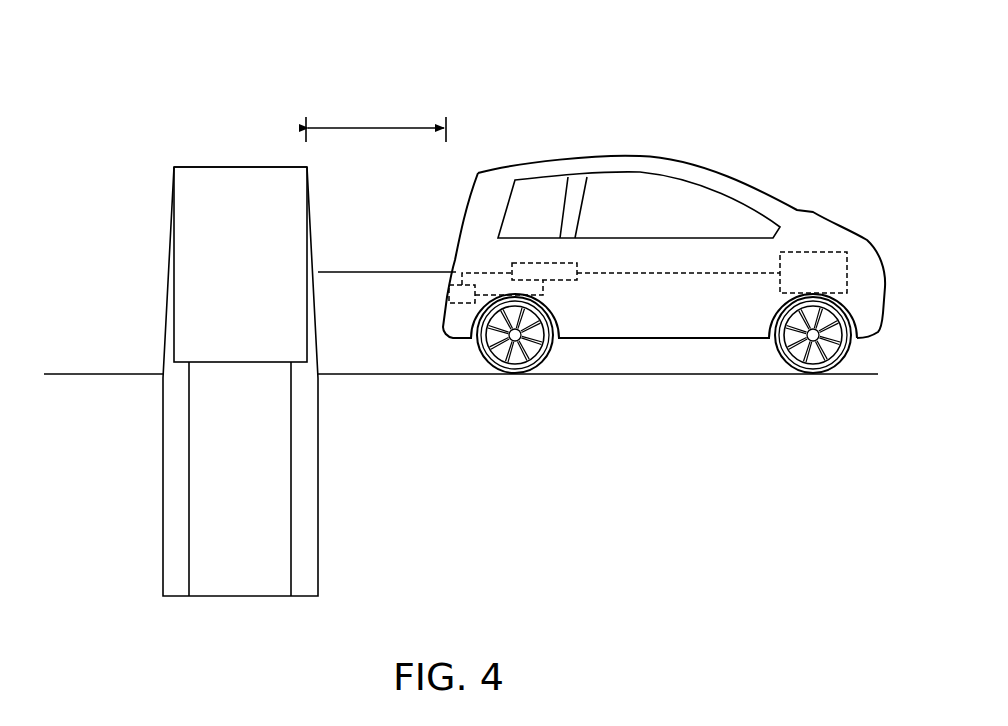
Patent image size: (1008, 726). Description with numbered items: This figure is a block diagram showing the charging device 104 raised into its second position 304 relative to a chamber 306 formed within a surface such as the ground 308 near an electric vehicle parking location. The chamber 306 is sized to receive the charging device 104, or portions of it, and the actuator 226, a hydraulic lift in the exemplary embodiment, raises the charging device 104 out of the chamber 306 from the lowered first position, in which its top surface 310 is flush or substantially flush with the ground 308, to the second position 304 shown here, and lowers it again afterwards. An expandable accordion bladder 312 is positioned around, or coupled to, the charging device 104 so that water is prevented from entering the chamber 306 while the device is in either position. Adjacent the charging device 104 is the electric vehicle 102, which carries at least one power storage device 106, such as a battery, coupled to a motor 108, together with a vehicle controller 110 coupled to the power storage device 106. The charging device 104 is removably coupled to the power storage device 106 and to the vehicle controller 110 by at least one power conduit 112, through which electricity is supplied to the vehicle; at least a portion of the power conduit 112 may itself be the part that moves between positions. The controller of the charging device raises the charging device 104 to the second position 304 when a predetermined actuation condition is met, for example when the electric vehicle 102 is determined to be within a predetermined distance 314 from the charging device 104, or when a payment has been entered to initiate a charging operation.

The electric vehicle 102 is at (646, 219).
The charging device 104 is at (197, 183).
The power storage device 106 is at (565, 280).
The motor 108 is at (817, 252).
The vehicle controller 110 is at (458, 303).
The power conduit 112 is at (405, 272).
The actuator 226 is at (292, 548).
The second position 304 is at (232, 348).
The chamber 306 is at (172, 480).
The ground 308 is at (88, 374).
The top surface 310 is at (260, 167).
The expandable accordion bladder 312 is at (308, 236).
The predetermined distance 314 is at (376, 128).